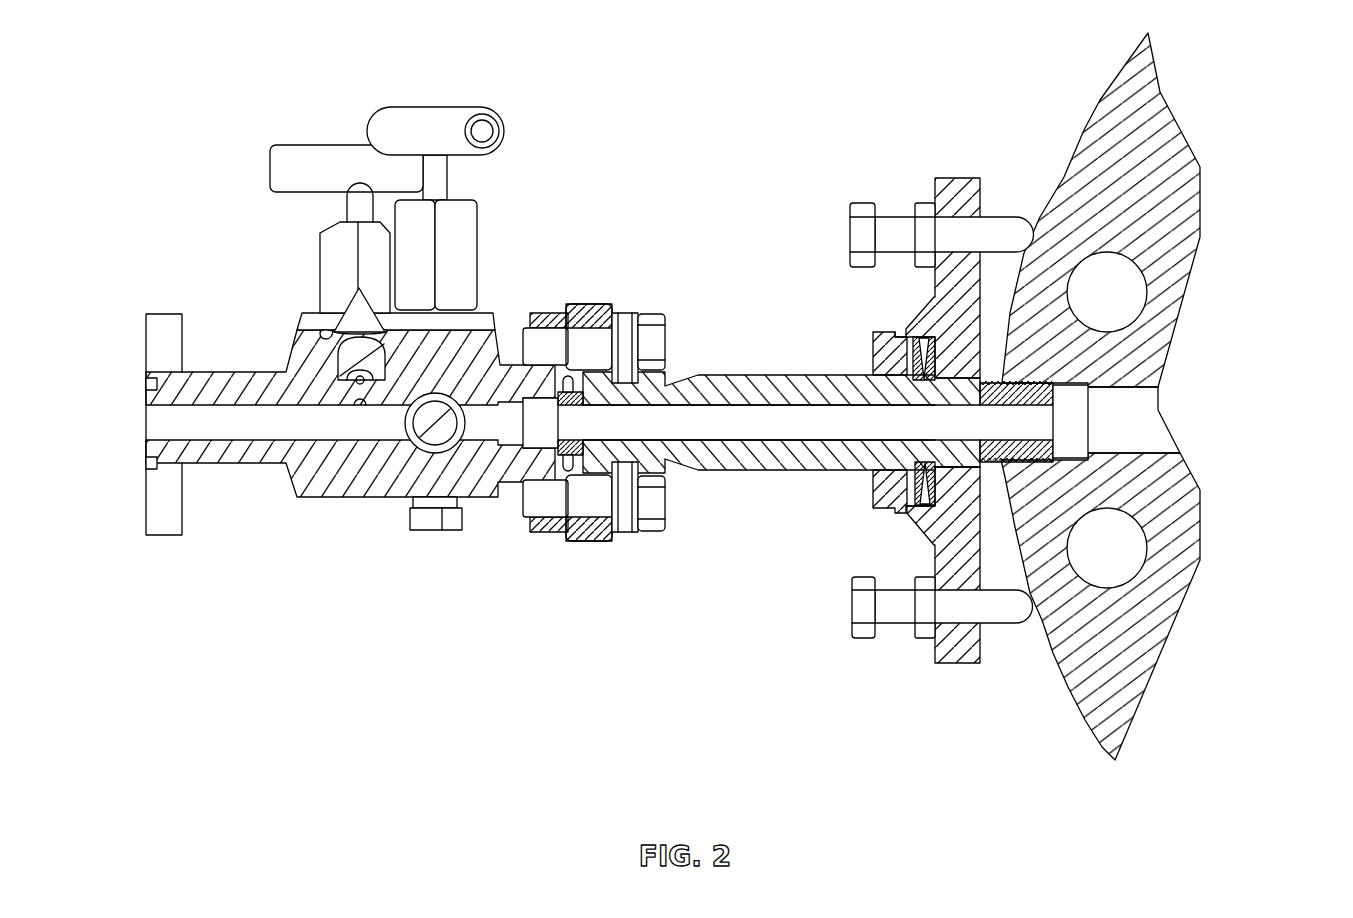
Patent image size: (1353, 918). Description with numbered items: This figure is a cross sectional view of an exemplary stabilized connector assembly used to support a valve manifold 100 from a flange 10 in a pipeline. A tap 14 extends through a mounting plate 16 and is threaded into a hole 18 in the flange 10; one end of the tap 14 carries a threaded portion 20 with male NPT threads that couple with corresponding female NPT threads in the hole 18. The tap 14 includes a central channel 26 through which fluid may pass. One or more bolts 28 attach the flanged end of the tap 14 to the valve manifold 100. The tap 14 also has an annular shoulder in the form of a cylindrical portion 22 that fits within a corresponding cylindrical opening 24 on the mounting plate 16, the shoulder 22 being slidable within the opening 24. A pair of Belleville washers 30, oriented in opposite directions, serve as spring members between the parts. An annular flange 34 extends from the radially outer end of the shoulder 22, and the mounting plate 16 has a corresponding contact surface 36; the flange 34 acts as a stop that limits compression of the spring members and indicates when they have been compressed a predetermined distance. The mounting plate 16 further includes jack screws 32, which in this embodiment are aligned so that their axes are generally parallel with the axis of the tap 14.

The flange 10 is at (1112, 638).
The tap 14 is at (698, 373).
The mounting plate 16 is at (952, 183).
The hole 18 is at (1142, 425).
The threaded portion 20 is at (992, 383).
The cylindrical portion 22 is at (878, 488).
The cylindrical opening 24 is at (938, 485).
The central channel 26 is at (732, 427).
The bolts 28 is at (650, 323).
The Belleville washers 30 is at (913, 368).
The jack screws 32 is at (857, 208).
The annular flange 34 is at (913, 335).
The contact surface 36 is at (907, 508).
The valve manifold 100 is at (333, 488).